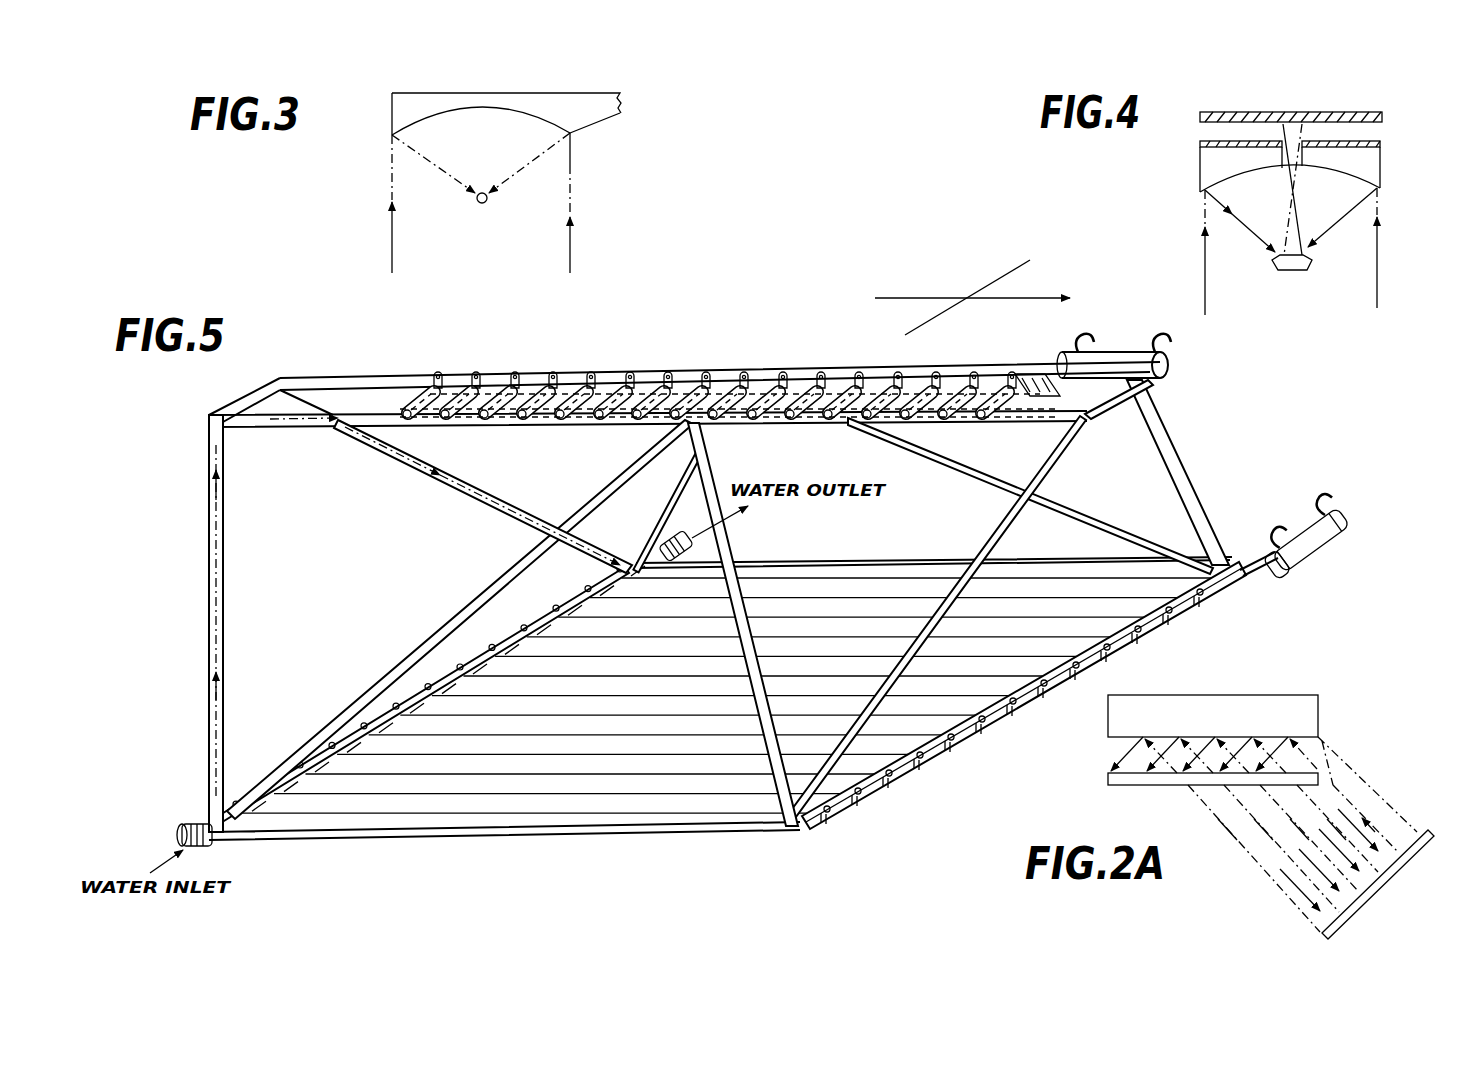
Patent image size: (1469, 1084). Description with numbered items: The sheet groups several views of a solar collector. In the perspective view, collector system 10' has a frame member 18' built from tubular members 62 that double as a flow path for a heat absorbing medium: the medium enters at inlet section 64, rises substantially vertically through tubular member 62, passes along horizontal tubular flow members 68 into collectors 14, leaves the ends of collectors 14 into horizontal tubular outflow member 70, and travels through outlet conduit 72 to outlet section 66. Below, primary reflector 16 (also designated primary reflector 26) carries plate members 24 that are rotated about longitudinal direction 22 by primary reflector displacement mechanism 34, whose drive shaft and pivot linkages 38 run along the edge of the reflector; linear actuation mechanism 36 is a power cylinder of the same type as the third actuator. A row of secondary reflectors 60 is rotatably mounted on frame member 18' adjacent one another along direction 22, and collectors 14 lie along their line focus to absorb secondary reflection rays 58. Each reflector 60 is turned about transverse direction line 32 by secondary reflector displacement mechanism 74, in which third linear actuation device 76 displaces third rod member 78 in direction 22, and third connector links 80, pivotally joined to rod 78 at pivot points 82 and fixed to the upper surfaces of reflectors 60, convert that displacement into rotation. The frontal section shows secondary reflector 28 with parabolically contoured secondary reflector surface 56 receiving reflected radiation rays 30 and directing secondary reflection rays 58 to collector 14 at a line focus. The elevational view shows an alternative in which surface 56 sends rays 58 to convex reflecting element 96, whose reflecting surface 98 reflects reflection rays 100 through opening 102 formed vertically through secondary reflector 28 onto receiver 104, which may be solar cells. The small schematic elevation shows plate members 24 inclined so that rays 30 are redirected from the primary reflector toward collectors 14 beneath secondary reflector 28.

In FIG. 5, the collector system 10' is at (759, 603).
In FIG. 3, the collectors 14 is at (481, 203).
In FIG. 2A, the collectors 14 is at (1138, 786).
In FIG. 5, the collectors 14 is at (1043, 393).
In FIG. 5, the primary reflector 16 is at (870, 577).
In FIG. 5, the frame member 18' is at (460, 650).
In FIG. 5, the longitudinal direction 22 is at (1007, 300).
In FIG. 2A, the plate members 24 is at (1398, 870).
In FIG. 5, the plate members 24 is at (824, 605).
In FIG. 5, the primary reflector 26 is at (364, 826).
In FIG. 3, the secondary reflector 28 is at (600, 93).
In FIG. 4, the secondary reflector 28 is at (1386, 146).
In FIG. 2A, the secondary reflector 28 is at (1232, 690).
In FIG. 3, the reflected radiation rays 30 is at (574, 225).
In FIG. 4, the reflected radiation rays 30 is at (1212, 274).
In FIG. 2A, the reflected radiation rays 30 is at (1415, 796).
In FIG. 5, the transverse direction line 32 is at (1000, 279).
In FIG. 5, the primary reflector displacement mechanism 34 is at (1230, 598).
In FIG. 5, the linear actuation mechanism 36 is at (1340, 535).
In FIG. 5, the mirror pivot linkage 38 is at (1183, 618).
In FIG. 3, the secondary reflector surfaces 56 is at (538, 118).
In FIG. 4, the secondary reflector surfaces 56 is at (1371, 175).
In FIG. 3, the secondary reflection rays 58 is at (424, 160).
In FIG. 4, the secondary reflection rays 58 is at (1235, 222).
In FIG. 5, the secondary reflectors 60 is at (470, 400).
In FIG. 5, the tubular members 62 is at (224, 640).
In FIG. 5, the inlet section 64 is at (213, 840).
In FIG. 5, the outlet section 66 is at (668, 535).
In FIG. 5, the horizontal tubular flow members 68 is at (347, 420).
In FIG. 5, the horizontal tubular outflow member 70 is at (333, 386).
In FIG. 5, the outlet conduit 72 is at (452, 491).
In FIG. 5, the secondary reflector displacement mechanism 74 is at (1020, 350).
In FIG. 5, the third linear actuation device 76 is at (1103, 351).
In FIG. 5, the third rod member 78 is at (812, 371).
In FIG. 5, the third connector links 80 is at (752, 371).
In FIG. 5, the pivot points 82 is at (676, 370).
In FIG. 4, the convex reflecting element 96 is at (1302, 272).
In FIG. 4, the reflecting surface 98 is at (1282, 220).
In FIG. 4, the reflection rays 100 is at (1300, 220).
In FIG. 4, the opening 102 is at (1283, 127).
In FIG. 4, the receiver 104 is at (1318, 110).